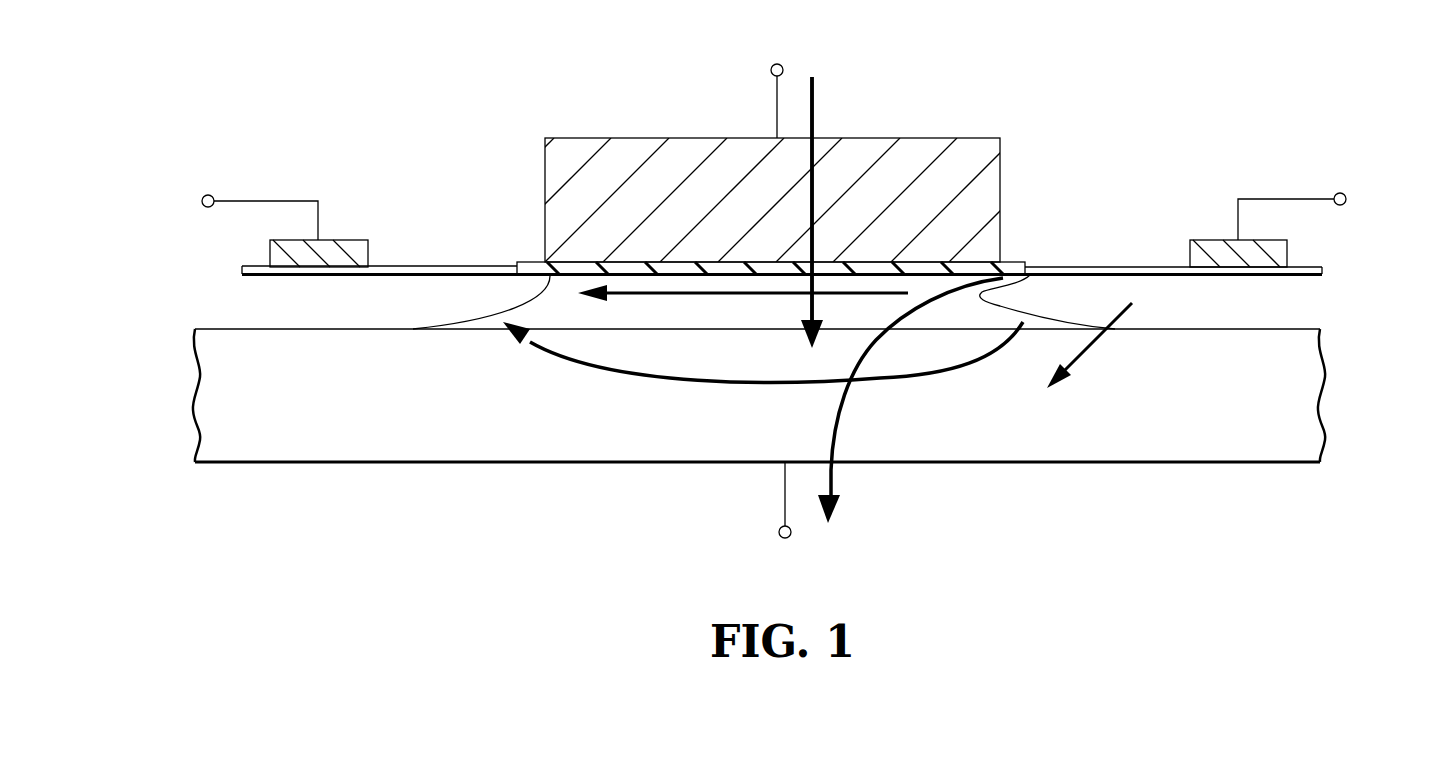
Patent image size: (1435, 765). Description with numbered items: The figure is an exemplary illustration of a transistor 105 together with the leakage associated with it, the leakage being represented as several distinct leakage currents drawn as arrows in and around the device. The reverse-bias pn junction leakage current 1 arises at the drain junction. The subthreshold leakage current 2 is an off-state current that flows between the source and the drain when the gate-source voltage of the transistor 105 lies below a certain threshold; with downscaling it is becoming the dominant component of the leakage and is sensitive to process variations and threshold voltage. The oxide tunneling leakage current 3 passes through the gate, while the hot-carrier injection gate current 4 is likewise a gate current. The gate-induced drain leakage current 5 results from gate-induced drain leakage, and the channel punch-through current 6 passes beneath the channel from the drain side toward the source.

The transistor 105 is at (761, 321).
The leakage current I1 1 is at (1089, 345).
The leakage current I2 2 is at (743, 311).
The leakage current I3 3 is at (824, 212).
The leakage current I4 4 is at (843, 199).
The leakage current I5 5 is at (910, 400).
The leakage current I6 6 is at (763, 374).